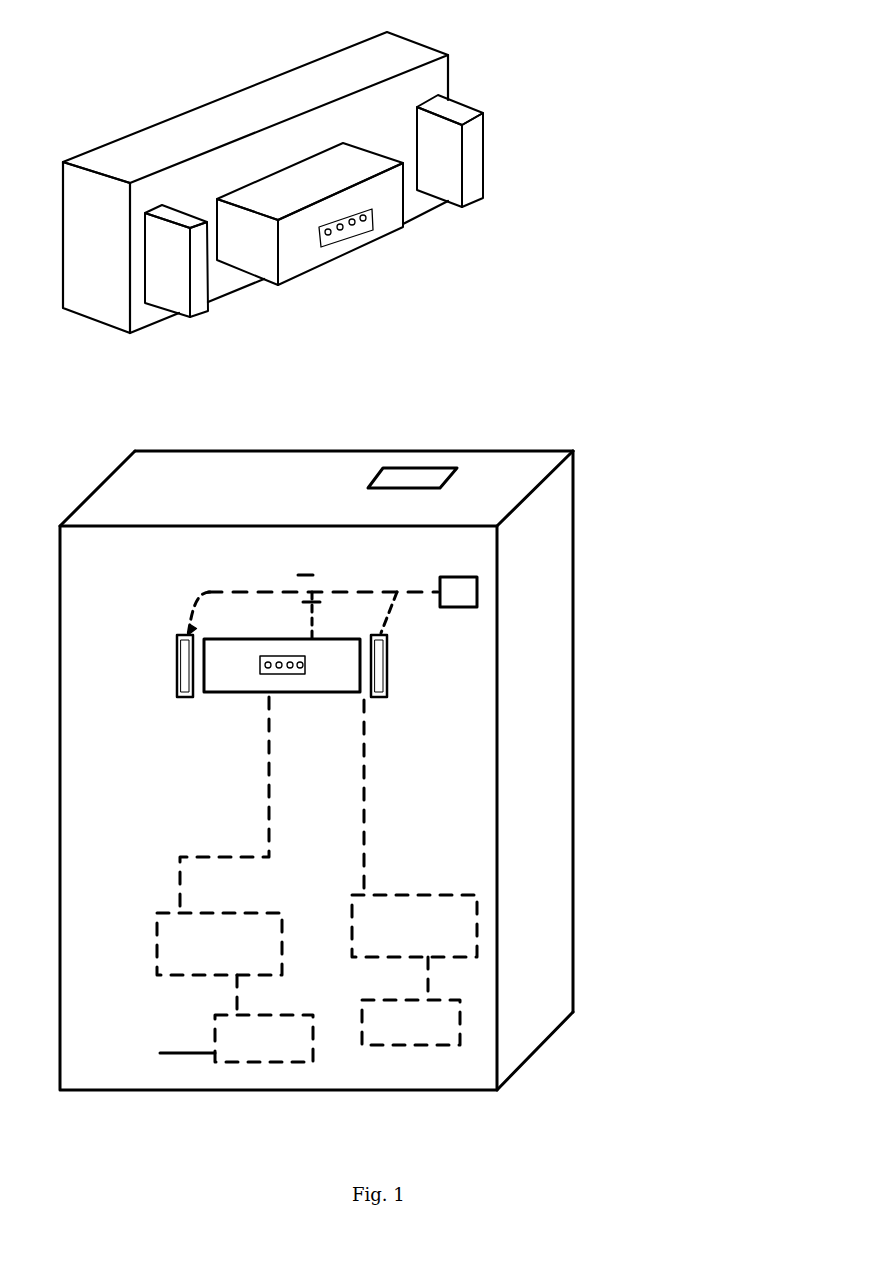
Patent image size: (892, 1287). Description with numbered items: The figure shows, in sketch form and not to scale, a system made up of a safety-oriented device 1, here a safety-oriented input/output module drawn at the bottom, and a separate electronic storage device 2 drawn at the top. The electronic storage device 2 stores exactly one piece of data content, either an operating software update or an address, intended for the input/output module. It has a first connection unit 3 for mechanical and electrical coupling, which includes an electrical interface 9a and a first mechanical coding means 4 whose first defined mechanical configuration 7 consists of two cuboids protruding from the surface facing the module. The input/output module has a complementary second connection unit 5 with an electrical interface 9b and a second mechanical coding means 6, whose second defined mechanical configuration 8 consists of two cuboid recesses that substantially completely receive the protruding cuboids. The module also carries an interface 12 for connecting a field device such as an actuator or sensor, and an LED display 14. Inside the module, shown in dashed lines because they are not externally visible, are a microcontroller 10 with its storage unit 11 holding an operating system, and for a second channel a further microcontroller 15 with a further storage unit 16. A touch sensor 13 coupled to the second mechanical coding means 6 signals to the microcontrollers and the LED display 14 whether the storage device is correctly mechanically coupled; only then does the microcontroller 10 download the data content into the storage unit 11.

The safety-oriented device 1 is at (592, 485).
The electronic storage device 2 is at (150, 111).
The first connection unit 3 is at (335, 146).
The first mechanical coding means 4 is at (168, 267).
The second connection unit 5 is at (367, 702).
The second mechanical coding means 6 is at (185, 632).
The first defined mechanical configuration 7 is at (470, 157).
The second defined mechanical configuration 8 is at (382, 700).
The electrical interface 9a is at (387, 212).
The electrical interface 9b is at (245, 660).
The microcontroller 10 is at (158, 937).
The storage unit 11 is at (219, 1043).
The interface 12 is at (418, 477).
The touch sensor 13 is at (298, 575).
The LED display 14 is at (478, 592).
The further microcontroller 15 is at (427, 897).
The further storage unit 16 is at (397, 1022).